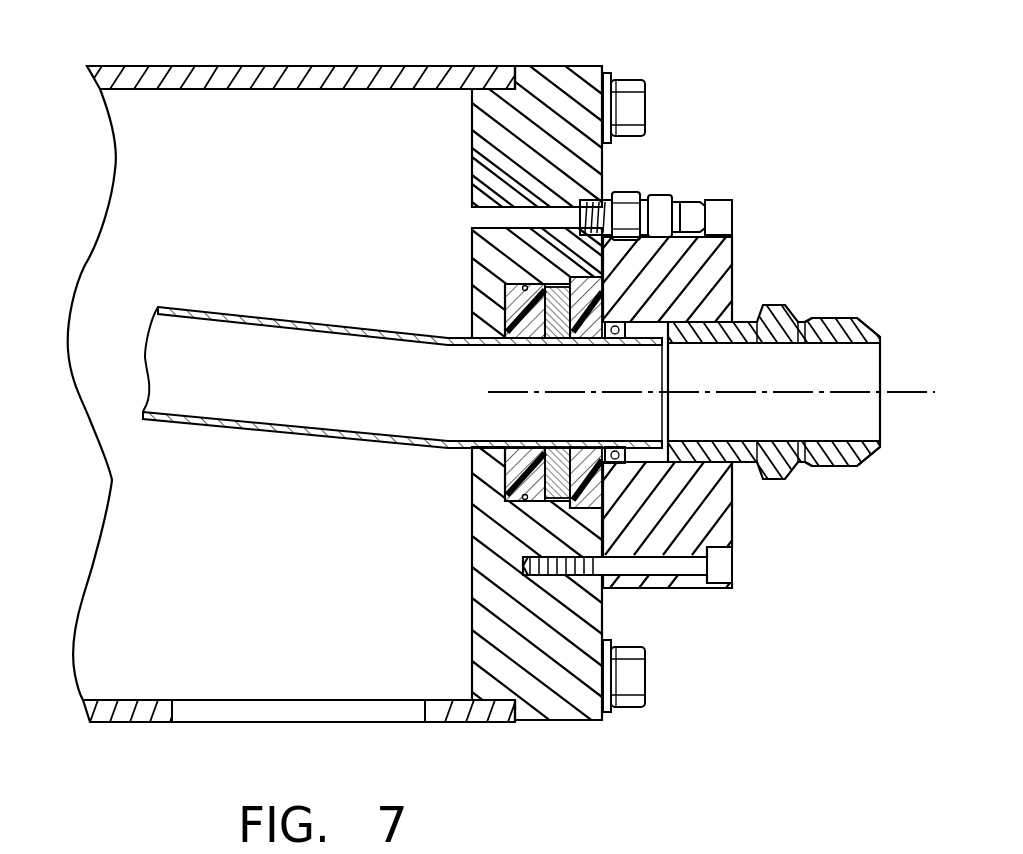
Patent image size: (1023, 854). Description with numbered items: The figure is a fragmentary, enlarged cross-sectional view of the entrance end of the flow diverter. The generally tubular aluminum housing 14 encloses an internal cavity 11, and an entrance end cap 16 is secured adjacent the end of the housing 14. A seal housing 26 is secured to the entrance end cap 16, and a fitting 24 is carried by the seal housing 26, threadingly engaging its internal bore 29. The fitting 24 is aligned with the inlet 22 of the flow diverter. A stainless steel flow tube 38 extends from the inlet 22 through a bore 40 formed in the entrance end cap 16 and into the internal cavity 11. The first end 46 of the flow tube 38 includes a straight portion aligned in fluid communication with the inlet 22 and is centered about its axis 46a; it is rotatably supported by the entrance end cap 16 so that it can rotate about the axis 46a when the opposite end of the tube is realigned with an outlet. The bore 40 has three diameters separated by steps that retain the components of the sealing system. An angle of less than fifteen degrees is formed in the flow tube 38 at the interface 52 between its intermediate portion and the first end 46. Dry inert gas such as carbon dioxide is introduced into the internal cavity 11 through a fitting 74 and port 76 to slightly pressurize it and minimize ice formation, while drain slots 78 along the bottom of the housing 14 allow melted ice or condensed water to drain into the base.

The internal cavity 11 is at (281, 172).
The housing 14 is at (443, 72).
The entrance end cap 16 is at (557, 75).
The inlet 22 is at (737, 355).
The fitting 24 is at (858, 325).
The seal housing 26 is at (740, 268).
The internal bore 29 is at (648, 443).
The flow tube 38 is at (237, 318).
The bore 40 is at (478, 334).
The first end 46 is at (522, 347).
The axis 46a is at (907, 392).
The interface 52 is at (442, 452).
The fitting 74 is at (660, 205).
The port 76 is at (480, 216).
The drain slots 78 is at (278, 710).